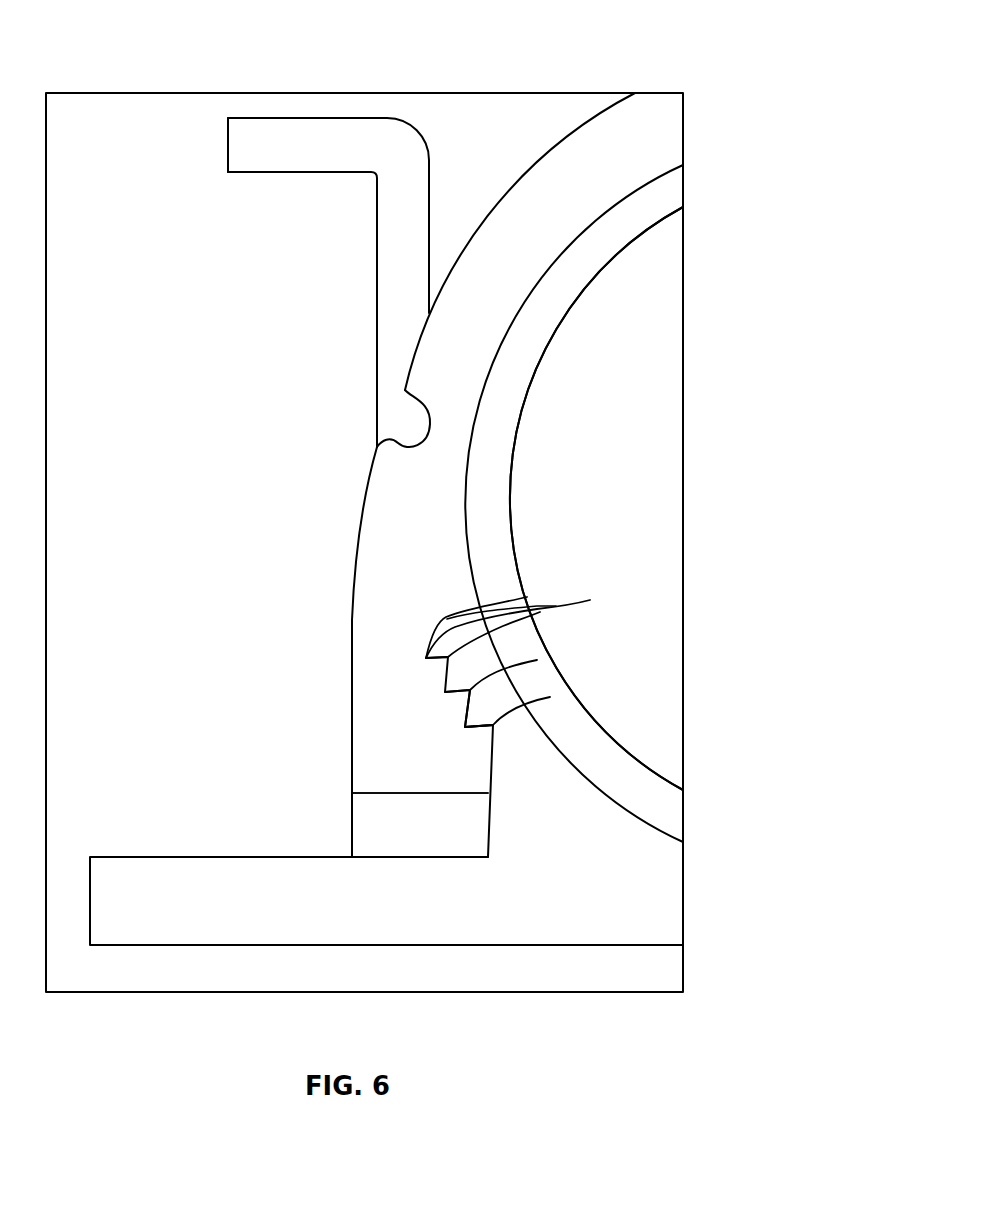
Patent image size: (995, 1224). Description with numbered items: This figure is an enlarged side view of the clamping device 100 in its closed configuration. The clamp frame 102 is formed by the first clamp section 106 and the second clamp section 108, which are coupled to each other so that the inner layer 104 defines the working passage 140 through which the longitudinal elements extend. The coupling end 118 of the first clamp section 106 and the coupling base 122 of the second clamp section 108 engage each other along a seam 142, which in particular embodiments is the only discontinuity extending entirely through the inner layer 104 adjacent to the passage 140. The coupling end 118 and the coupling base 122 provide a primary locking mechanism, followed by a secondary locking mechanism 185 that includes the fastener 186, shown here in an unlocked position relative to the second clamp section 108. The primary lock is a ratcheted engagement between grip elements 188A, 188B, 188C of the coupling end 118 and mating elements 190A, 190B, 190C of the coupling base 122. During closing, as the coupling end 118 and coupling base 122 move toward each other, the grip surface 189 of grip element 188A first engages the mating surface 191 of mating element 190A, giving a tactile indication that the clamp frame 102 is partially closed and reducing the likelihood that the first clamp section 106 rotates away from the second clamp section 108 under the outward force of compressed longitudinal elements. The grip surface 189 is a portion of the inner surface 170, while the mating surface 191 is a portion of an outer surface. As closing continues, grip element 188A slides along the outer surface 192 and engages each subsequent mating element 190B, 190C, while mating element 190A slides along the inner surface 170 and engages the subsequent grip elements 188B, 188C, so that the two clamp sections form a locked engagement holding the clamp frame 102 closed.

The clamping device 100 is at (152, 240).
The clamp frame 102 is at (553, 436).
The inner layer 104 is at (519, 372).
The first clamp section 106 is at (575, 115).
The second clamp section 108 is at (653, 718).
The coupling end 118 is at (335, 708).
The coupling base 122 is at (530, 800).
The working passage 140 is at (630, 525).
The seam 142 is at (466, 597).
The inner surface 170 is at (500, 743).
The secondary locking mechanism 185 is at (386, 498).
The fastener 186 is at (333, 117).
The grip element 188A is at (465, 727).
The grip element 188B is at (470, 690).
The grip element 188C is at (448, 657).
The grip surface 189 is at (493, 725).
The mating element 190A is at (540, 600).
The mating element 190B is at (537, 660).
The mating element 190C is at (598, 676).
The mating surface 191 is at (590, 600).
The outer surface 192 is at (443, 692).